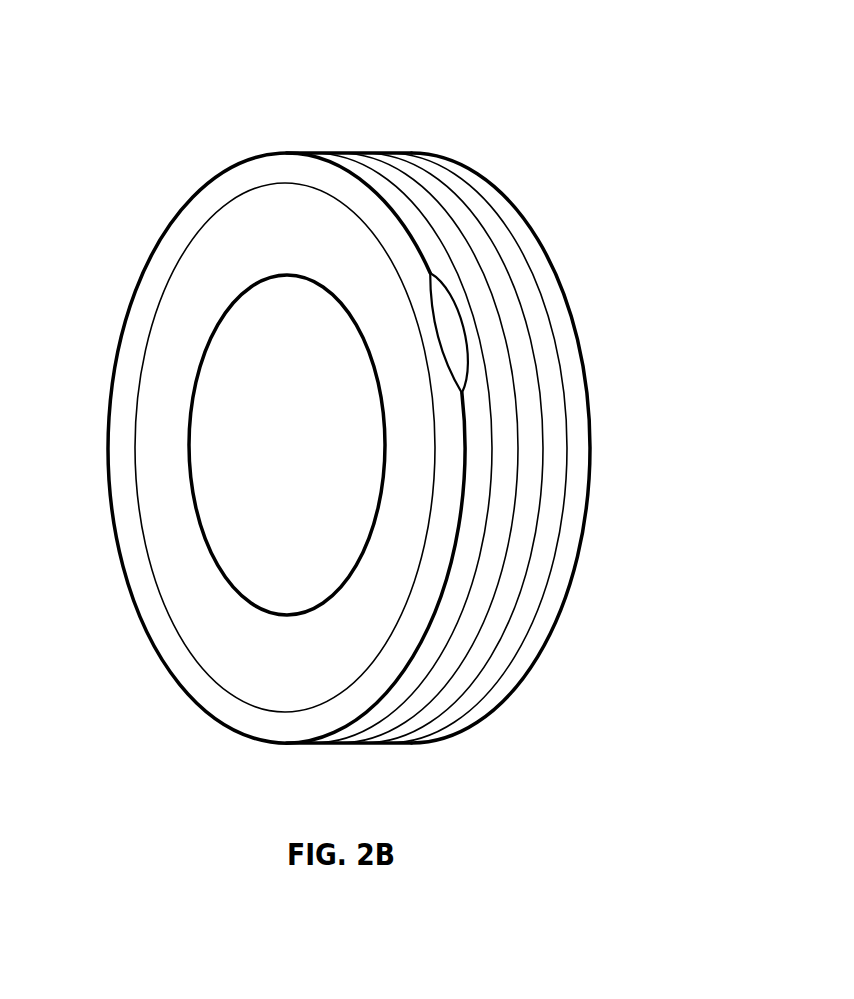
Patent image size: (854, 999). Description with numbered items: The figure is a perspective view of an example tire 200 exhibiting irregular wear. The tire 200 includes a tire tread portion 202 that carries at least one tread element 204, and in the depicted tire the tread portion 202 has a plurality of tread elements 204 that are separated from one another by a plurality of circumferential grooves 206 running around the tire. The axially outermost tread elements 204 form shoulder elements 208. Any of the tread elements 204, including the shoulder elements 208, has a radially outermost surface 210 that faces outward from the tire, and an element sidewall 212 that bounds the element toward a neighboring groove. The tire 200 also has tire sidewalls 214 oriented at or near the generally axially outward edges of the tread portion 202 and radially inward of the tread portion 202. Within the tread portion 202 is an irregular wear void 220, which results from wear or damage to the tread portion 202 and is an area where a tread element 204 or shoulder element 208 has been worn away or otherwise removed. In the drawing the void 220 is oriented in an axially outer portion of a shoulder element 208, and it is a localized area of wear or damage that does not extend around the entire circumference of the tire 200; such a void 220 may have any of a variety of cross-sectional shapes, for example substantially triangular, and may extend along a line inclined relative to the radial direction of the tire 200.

The tire 200 is at (490, 105).
The tire tread portion 202 is at (568, 270).
The tread element 204 is at (515, 560).
The circumferential groove 206 is at (447, 167).
The shoulder element 208 is at (440, 634).
The radially outermost surface 210 is at (332, 152).
The element sidewall 212 is at (305, 166).
The tire sidewall 214 is at (213, 667).
The irregular wear void 220 is at (455, 345).